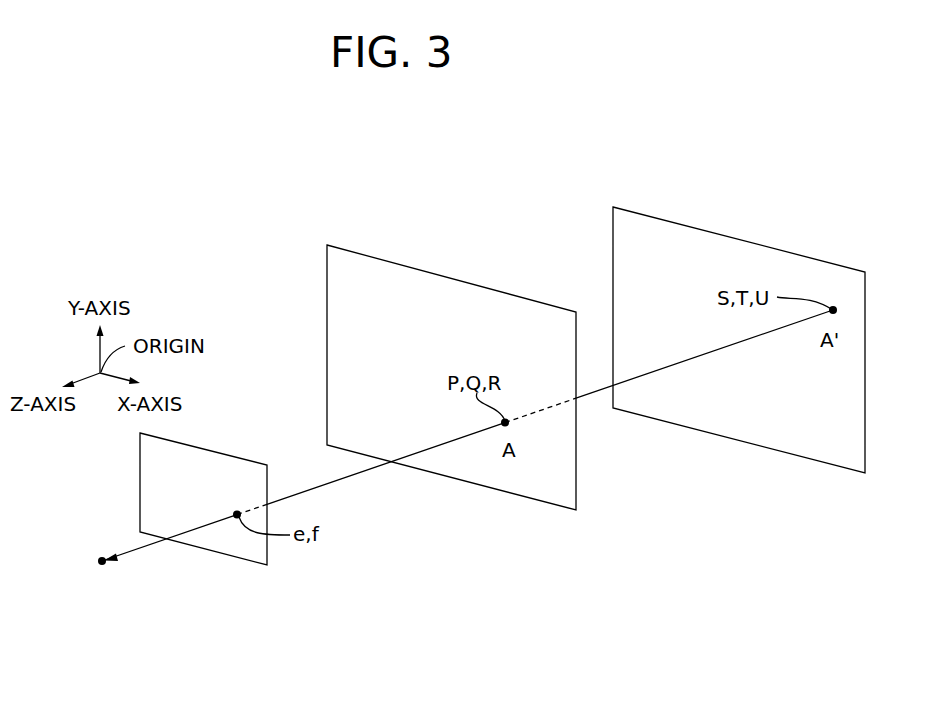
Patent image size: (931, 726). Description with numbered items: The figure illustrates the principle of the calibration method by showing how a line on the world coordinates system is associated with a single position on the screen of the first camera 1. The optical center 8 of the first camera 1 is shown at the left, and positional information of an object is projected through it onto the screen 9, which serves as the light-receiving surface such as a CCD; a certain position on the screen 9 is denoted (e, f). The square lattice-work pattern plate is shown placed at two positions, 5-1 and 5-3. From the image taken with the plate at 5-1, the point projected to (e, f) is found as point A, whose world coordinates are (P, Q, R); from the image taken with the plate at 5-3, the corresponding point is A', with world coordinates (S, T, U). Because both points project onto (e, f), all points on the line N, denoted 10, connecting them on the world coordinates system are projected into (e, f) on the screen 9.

The first camera 1 is at (187, 545).
The optical center 8 is at (108, 586).
The screen 9 is at (210, 553).
The line N 10 is at (592, 392).
The first position of square lattice-work pattern plate 5-1 is at (525, 497).
The second position of square lattice-work pattern plate 5-3 is at (780, 453).